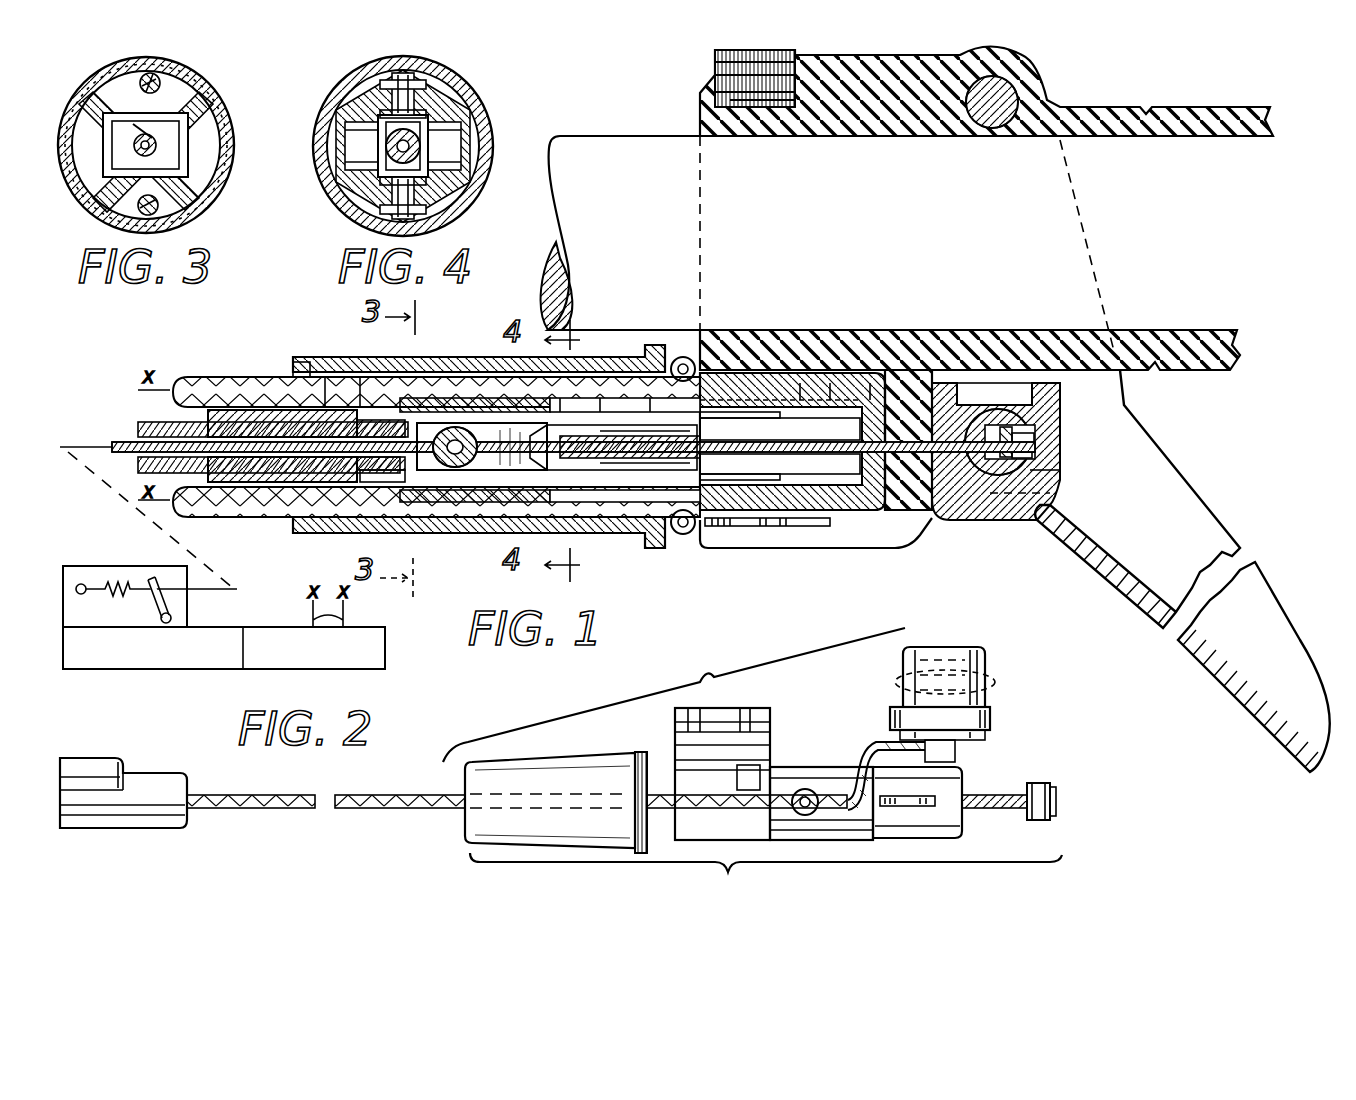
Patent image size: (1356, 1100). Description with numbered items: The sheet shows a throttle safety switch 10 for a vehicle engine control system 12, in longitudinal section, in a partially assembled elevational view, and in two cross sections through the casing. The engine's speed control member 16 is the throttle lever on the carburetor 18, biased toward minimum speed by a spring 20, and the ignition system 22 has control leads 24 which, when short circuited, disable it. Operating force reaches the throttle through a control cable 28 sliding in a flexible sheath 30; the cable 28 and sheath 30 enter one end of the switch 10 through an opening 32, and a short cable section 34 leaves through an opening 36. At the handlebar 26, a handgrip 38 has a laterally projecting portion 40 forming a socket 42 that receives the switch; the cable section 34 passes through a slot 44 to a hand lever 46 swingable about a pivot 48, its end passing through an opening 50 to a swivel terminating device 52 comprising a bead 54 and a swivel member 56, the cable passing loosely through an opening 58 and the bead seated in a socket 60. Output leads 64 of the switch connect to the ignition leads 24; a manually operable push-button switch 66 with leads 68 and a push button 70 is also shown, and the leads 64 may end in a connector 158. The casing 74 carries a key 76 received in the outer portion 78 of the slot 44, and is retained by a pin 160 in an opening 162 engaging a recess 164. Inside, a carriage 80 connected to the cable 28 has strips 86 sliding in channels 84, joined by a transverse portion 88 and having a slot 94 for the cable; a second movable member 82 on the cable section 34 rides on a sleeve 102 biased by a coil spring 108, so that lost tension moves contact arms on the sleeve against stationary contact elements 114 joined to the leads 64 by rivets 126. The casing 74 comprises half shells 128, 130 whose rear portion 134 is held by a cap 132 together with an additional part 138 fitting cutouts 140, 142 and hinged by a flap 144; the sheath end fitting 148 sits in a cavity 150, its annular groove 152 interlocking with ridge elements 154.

In FIG. 1, the safety switch 10 is at (298, 359).
In FIG. 2, the safety switch 10 is at (804, 744).
In FIG. 1, the control system 12 is at (107, 533).
In FIG. 1, the speed control member 16 is at (152, 600).
In FIG. 1, the carburetor 18 is at (187, 612).
In FIG. 1, the spring 20 is at (108, 590).
In FIG. 1, the ignition system 22 is at (386, 656).
In FIG. 1, the control leads 24 is at (345, 612).
In FIG. 1, the handlebar 26 is at (644, 132).
In FIG. 3, the control cable 28 is at (133, 124).
In FIG. 1, the control cable 28 is at (112, 440).
In FIG. 1, the sheath 30 is at (133, 420).
In FIG. 1, the opening 32 is at (270, 410).
In FIG. 1, the control cable section 34 is at (845, 500).
In FIG. 2, the control cable section 34 is at (1000, 798).
In FIG. 1, the opening 36 is at (945, 520).
In FIG. 1, the handgrip 38 is at (1180, 372).
In FIG. 1, the laterally projecting portion 40 is at (922, 554).
In FIG. 1, the socket 42 is at (815, 526).
In FIG. 1, the slot 44 is at (962, 520).
In FIG. 1, the hand lever 46 is at (1118, 590).
In FIG. 1, the pivot 48 is at (1010, 98).
In FIG. 1, the opening 50 is at (965, 405).
In FIG. 1, the swivel terminating device 52 is at (1011, 401).
In FIG. 1, the bead-shaped element 54 is at (1034, 438).
In FIG. 1, the swivel member 56 is at (1016, 428).
In FIG. 2, the swivel member 56 is at (1056, 786).
In FIG. 1, the opening 58 is at (1040, 520).
In FIG. 1, the socket 60 is at (1034, 458).
In FIG. 3, the output leads 64 is at (175, 60).
In FIG. 1, the output leads 64 is at (200, 385).
In FIG. 2, the output leads 64 is at (345, 790).
In FIG. 2, the manually operable switch 66 is at (1006, 726).
In FIG. 2, the output leads 68 is at (860, 745).
In FIG. 2, the push button 70 is at (975, 647).
In FIG. 3, the casing 74 is at (214, 71).
In FIG. 4, the casing 74 is at (316, 94).
In FIG. 1, the casing 74 is at (740, 526).
In FIG. 2, the casing 74 is at (965, 768).
In FIG. 1, the key 76 is at (752, 526).
In FIG. 2, the key 76 is at (905, 805).
In FIG. 1, the outer portion 78 is at (782, 526).
In FIG. 1, the carriage 80 is at (450, 400).
In FIG. 1, the second movable member 82 is at (556, 425).
In FIG. 4, the channels 84 is at (352, 108).
In FIG. 1, the channels 84 is at (745, 400).
In FIG. 3, the elements 86 is at (158, 147).
In FIG. 4, the elements 86 is at (435, 160).
In FIG. 1, the elements 86 is at (482, 470).
In FIG. 1, the transverse portion 88 is at (665, 425).
In FIG. 3, the slot 94 is at (190, 130).
In FIG. 1, the sleeve 102 is at (710, 330).
In FIG. 1, the coil spring 108 is at (630, 428).
In FIG. 3, the stationary contact elements 114 is at (195, 160).
In FIG. 4, the stationary contact elements 114 is at (440, 95).
In FIG. 1, the stationary contact elements 114 is at (750, 418).
In FIG. 4, the rivets 126 is at (418, 82).
In FIG. 3, the half shell 128 is at (88, 98).
In FIG. 4, the half shell 128 is at (460, 125).
In FIG. 3, the half shell 130 is at (95, 190).
In FIG. 4, the half shell 130 is at (465, 147).
In FIG. 3, the cap 132 is at (150, 73).
In FIG. 1, the cap 132 is at (650, 533).
In FIG. 2, the rear portion 134 is at (592, 762).
In FIG. 3, the additional part 138 is at (190, 178).
In FIG. 3, the cutout 140 is at (200, 108).
In FIG. 3, the cutout 142 is at (138, 208).
In FIG. 3, the hinge 144 is at (215, 92).
In FIG. 1, the end fitting 148 is at (305, 360).
In FIG. 1, the cavity 150 is at (330, 390).
In FIG. 1, the annular groove 152 is at (370, 482).
In FIG. 1, the ridge elements 154 is at (366, 390).
In FIG. 2, the connector 158 is at (98, 765).
In FIG. 1, the pin 160 is at (830, 380).
In FIG. 1, the opening 162 is at (798, 380).
In FIG. 1, the recess 164 is at (870, 380).